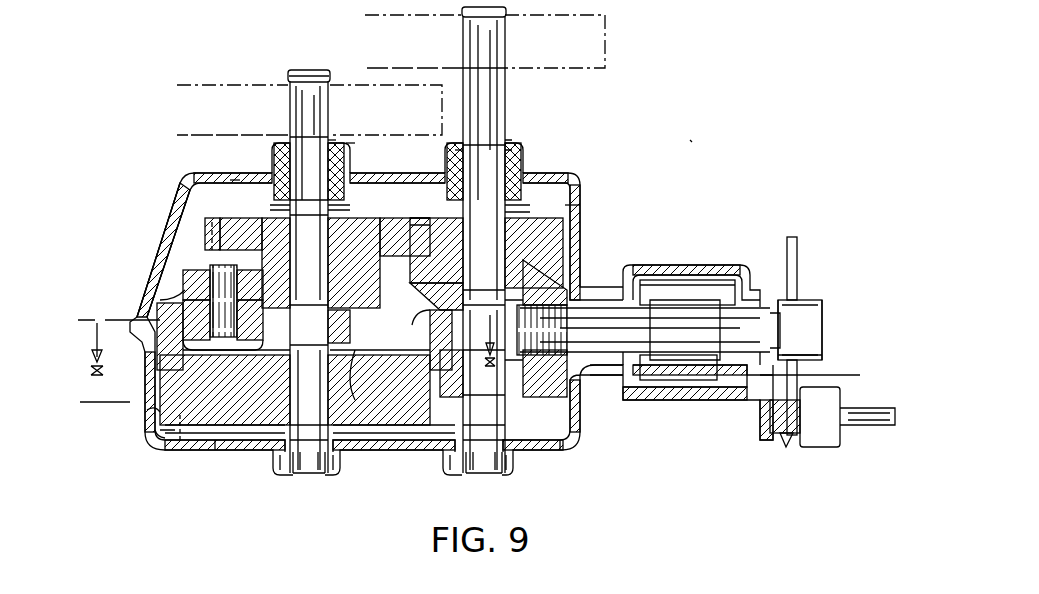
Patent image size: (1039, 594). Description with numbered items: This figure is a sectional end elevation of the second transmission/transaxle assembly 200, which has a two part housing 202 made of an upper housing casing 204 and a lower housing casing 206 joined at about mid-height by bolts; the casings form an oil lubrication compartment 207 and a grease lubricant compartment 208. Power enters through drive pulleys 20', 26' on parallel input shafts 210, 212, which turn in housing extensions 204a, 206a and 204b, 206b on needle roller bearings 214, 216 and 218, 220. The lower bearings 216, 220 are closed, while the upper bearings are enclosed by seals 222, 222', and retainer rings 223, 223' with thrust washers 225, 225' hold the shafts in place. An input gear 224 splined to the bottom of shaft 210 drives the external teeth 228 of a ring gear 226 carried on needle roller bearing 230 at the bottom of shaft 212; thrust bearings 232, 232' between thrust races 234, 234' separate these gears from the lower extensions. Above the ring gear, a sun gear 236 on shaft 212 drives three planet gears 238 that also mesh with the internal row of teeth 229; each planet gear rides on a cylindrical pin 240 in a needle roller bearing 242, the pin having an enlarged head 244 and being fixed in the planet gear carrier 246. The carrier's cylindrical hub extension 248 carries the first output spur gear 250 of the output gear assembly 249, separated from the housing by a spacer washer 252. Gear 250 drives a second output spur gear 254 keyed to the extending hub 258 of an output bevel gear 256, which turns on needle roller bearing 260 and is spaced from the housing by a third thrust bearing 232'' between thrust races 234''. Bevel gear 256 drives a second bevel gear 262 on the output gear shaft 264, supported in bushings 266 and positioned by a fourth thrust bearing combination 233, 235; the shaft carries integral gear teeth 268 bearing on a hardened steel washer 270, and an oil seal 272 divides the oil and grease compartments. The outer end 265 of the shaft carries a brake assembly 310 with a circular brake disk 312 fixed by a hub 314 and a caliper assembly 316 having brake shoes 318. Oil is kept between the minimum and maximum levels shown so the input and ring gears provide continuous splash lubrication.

The drive pulley 20' is at (506, 41).
The drive pulley 26' is at (309, 97).
The transmission/transaxle assembly 200 is at (690, 140).
The two part housing 202 is at (165, 210).
The upper housing casing 204 is at (172, 198).
The housing extension 204a is at (528, 152).
The housing extension 204b is at (352, 160).
The lower housing casing 206 is at (210, 455).
The housing extension 206a is at (518, 470).
The housing extension 206b is at (340, 470).
The oil lubrication compartment 207 is at (145, 413).
The grease lubricant compartment 208 is at (827, 378).
The input shaft 210 is at (505, 116).
The input shaft 212 is at (322, 110).
The needle roller bearing 214 is at (522, 165).
The needle roller bearing 216 is at (462, 468).
The needle roller bearing 218 is at (272, 165).
The needle roller bearing 220 is at (290, 465).
The seal 222 is at (478, 178).
The seal 222' is at (320, 159).
The retainer ring 223 is at (330, 308).
The retainer ring 223' is at (352, 125).
The input gear 224 is at (575, 425).
The thrust washer 225 is at (437, 150).
The thrust washer 225' is at (387, 126).
The ring gear 226 is at (232, 448).
The external teeth 228 is at (153, 440).
The internal row of teeth 229 is at (425, 316).
The needle roller bearing 230 is at (352, 362).
The thrust bearing 232 is at (426, 432).
The thrust bearing 232' is at (225, 432).
The third thrust bearing 232'' is at (534, 200).
The fourth thrust bearing combination 233 is at (620, 375).
The fourth thrust bearing combination 235 is at (642, 402).
The thrust race 234 is at (588, 449).
The thrust race 234' is at (366, 432).
The thrust race 234'' is at (600, 187).
The sun gear 236 is at (350, 327).
The planet gear 238 is at (200, 320).
The cylindrical pin 240 is at (222, 290).
The needle roller bearing 242 is at (232, 350).
The enlarged head 244 is at (175, 362).
The planet gear carrier 246 is at (185, 270).
The cylindrical hub extension 248 is at (262, 225).
The output gear assembly 249 is at (248, 185).
The output spur gear 250 is at (206, 228).
The spacer washer 252 is at (352, 212).
The second output spur gear 254 is at (540, 228).
The output bevel gear 256 is at (430, 280).
The extending hub 258 is at (520, 235).
The needle roller bearing 260 is at (545, 250).
The second bevel gear 262 is at (570, 385).
The output gear shaft 264 is at (648, 330).
The outer end 265 is at (822, 326).
The bushing 266 is at (715, 268).
The integral gear teeth 268 is at (690, 375).
The hardened steel washer 270 is at (685, 330).
The oil seal 272 is at (687, 289).
The brake assembly 310 is at (828, 298).
The circular brake disk 312 is at (797, 250).
The hub 314 is at (822, 362).
The caliper assembly 316 is at (835, 450).
The brake shoe 318 is at (786, 448).